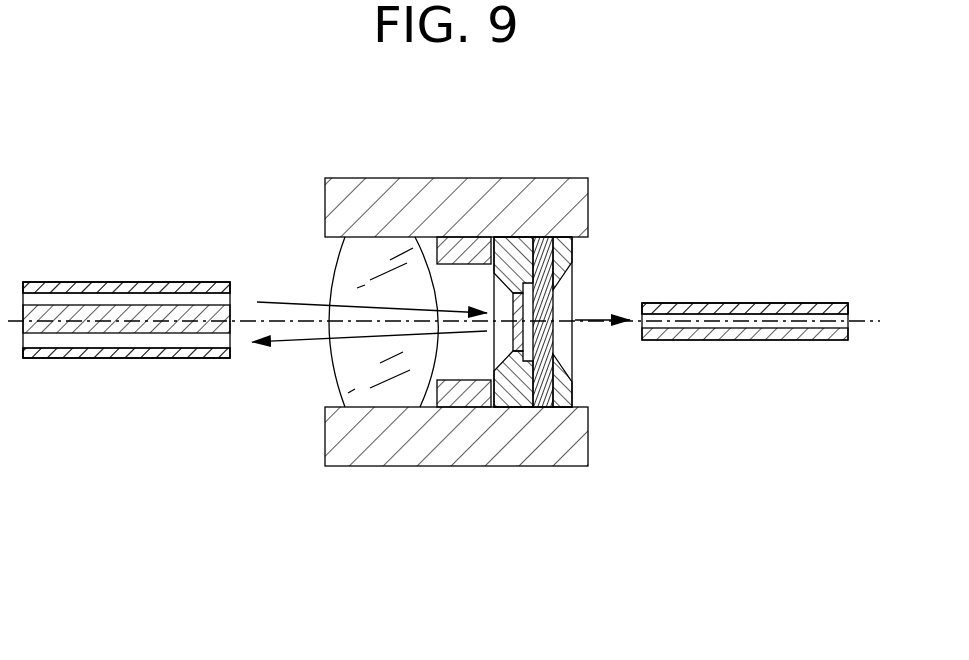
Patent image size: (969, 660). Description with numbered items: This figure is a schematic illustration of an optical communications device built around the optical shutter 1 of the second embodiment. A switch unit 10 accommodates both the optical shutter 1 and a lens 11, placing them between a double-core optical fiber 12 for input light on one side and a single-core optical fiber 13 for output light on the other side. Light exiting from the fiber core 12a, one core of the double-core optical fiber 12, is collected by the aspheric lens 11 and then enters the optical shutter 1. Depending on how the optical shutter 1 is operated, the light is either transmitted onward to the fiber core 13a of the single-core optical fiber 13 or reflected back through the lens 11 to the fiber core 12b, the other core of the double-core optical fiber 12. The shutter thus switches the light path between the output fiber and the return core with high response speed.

The optical shutter 1 is at (573, 253).
The switch unit 10 is at (397, 178).
The lens 11 is at (330, 377).
The double-core optical fiber 12 is at (67, 282).
The fiber core 12a is at (172, 282).
The fiber core 12b is at (140, 358).
The single-core optical fiber 13 is at (787, 303).
The fiber core 13a is at (698, 303).